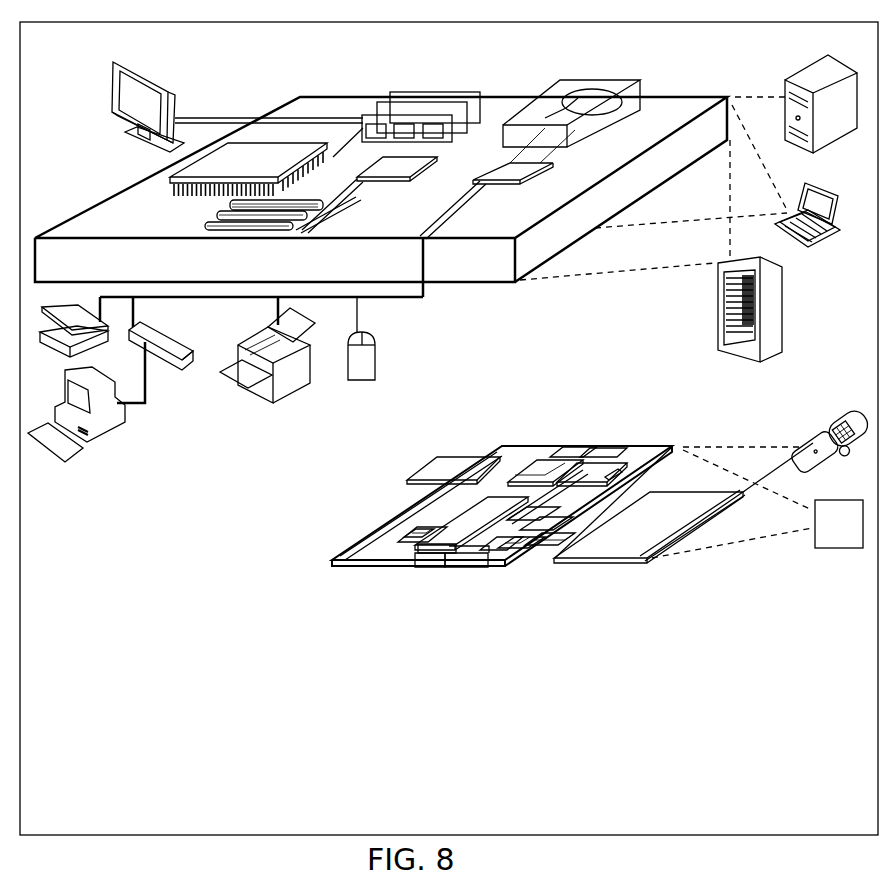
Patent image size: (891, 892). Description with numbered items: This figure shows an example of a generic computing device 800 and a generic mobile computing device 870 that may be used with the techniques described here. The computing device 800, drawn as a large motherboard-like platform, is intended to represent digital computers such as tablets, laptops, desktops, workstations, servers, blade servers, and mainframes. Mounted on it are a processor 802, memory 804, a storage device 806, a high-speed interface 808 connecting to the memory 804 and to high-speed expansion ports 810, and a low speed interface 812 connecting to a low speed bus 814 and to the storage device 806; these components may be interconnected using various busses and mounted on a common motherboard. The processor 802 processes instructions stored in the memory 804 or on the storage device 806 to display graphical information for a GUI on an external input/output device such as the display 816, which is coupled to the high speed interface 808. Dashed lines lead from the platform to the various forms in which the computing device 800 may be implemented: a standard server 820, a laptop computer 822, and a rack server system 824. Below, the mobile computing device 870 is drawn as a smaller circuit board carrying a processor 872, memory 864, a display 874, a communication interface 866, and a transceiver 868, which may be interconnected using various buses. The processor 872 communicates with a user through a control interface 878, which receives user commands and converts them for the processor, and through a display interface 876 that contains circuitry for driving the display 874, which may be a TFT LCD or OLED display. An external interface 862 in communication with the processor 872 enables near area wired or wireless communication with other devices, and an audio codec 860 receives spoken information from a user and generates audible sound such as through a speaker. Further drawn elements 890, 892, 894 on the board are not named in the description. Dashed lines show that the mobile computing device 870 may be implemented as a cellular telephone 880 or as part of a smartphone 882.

The computing device 800 is at (255, 75).
The processor 802 is at (171, 181).
The memory 804 is at (396, 98).
The storage device 806 is at (562, 82).
The high-speed interface 808 is at (357, 152).
The high-speed expansion ports 810 is at (215, 220).
The low speed interface 812 is at (515, 170).
The low speed bus 814 is at (432, 240).
The display 816 is at (120, 70).
The standard server 820 is at (781, 82).
The laptop computer 822 is at (806, 185).
The rack server system 824 is at (720, 320).
The audio codec 860 is at (559, 542).
The external interface 862 is at (426, 560).
The memory 864 is at (398, 534).
The communication interface 866 is at (540, 475).
The transceiver 868 is at (594, 474).
The mobile computing device 870 is at (485, 424).
The processor 872 is at (447, 559).
The display 874 is at (650, 559).
The display interface 876 is at (510, 560).
The control interface 878 is at (544, 544).
The cellular telephone 880 is at (845, 408).
The smartphone 882 is at (818, 506).
The integrated circuit 890 is at (574, 459).
The flex cable 892 is at (497, 454).
The battery 894 is at (436, 457).